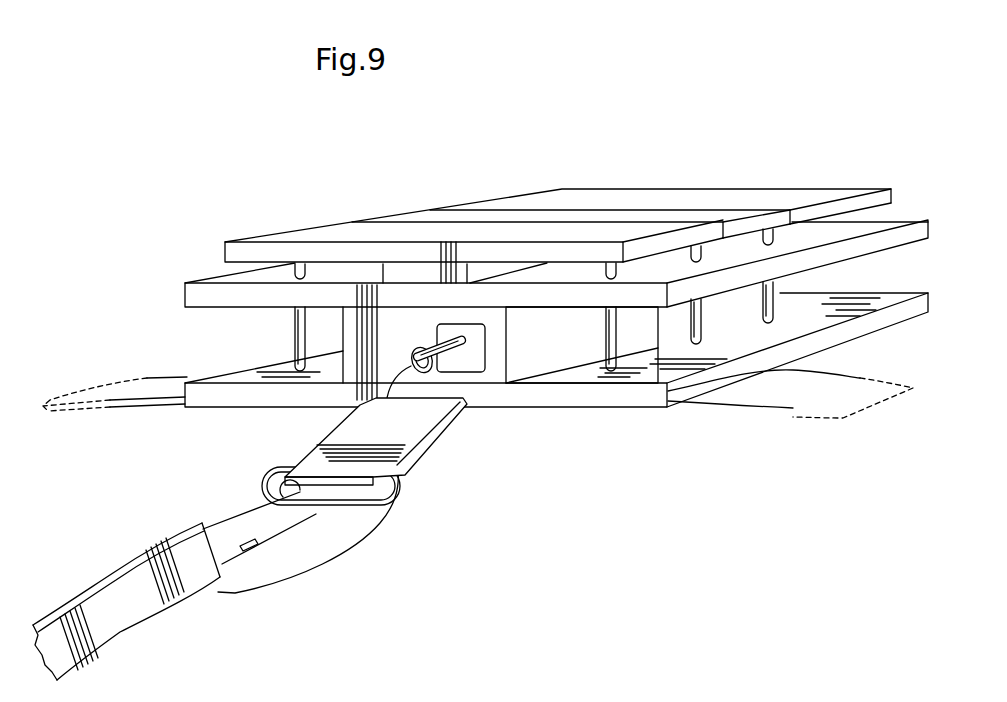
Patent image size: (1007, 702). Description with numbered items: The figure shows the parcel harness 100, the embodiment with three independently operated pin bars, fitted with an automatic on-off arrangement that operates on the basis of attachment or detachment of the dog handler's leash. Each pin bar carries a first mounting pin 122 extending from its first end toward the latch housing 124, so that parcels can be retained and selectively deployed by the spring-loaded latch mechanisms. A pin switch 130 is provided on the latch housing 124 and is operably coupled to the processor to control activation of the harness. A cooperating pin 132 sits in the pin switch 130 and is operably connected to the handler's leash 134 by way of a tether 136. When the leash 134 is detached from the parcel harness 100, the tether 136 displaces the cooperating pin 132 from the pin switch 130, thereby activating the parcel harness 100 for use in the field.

The parcel harness 100 is at (561, 205).
The first mounting pin 122 is at (297, 336).
The latch housing 124 is at (251, 400).
The pin switch 130 is at (473, 363).
The cooperating pin 132 is at (446, 343).
The leash 134 is at (135, 620).
The tether 136 is at (370, 550).